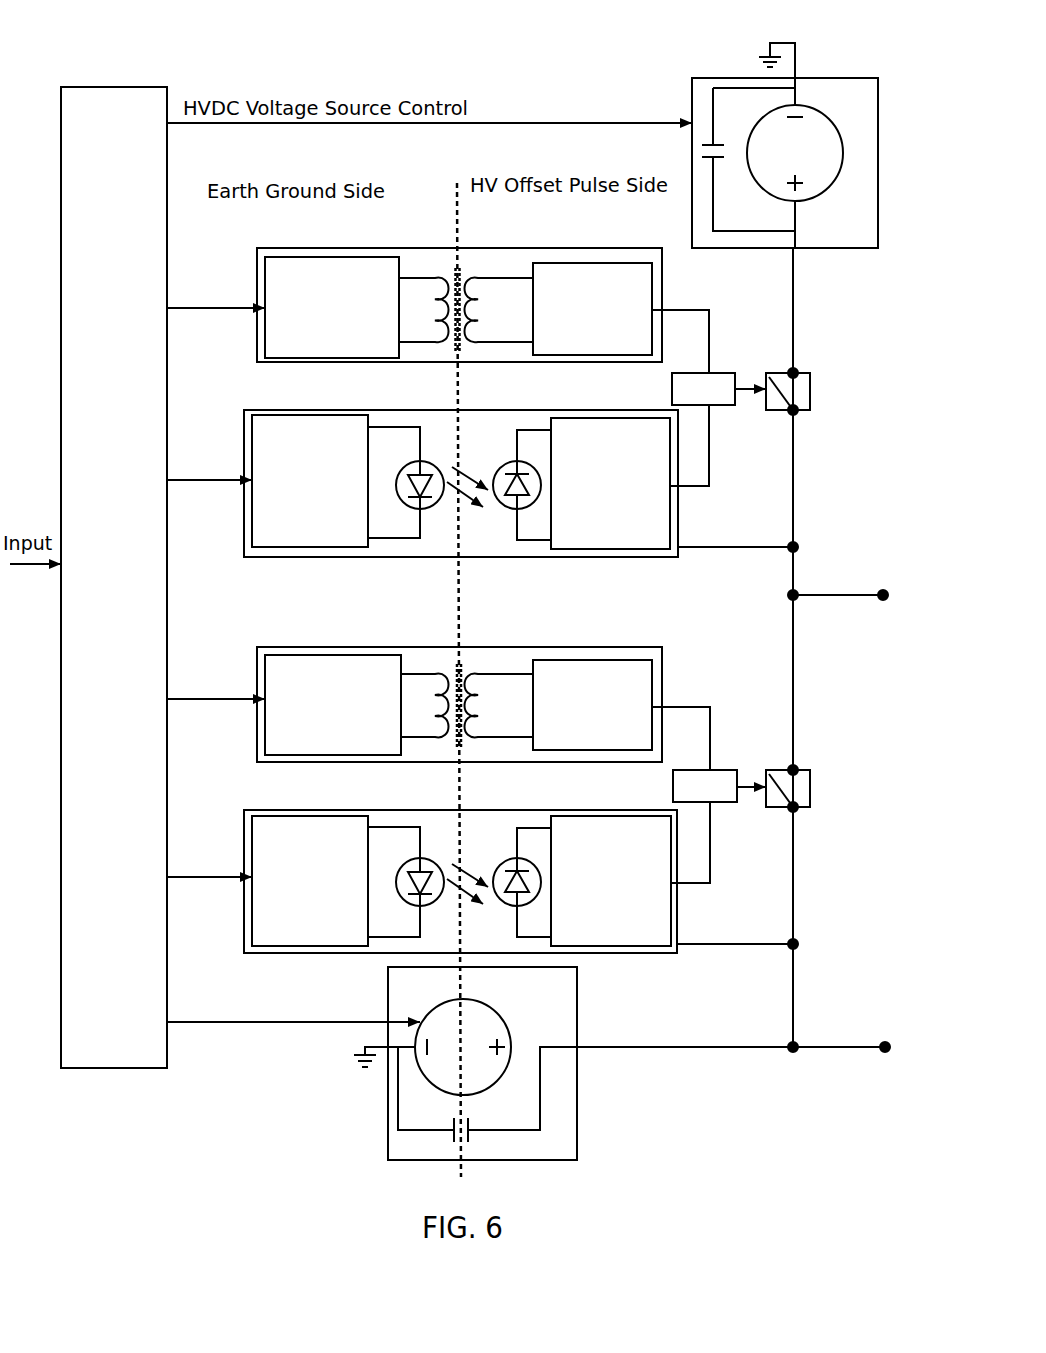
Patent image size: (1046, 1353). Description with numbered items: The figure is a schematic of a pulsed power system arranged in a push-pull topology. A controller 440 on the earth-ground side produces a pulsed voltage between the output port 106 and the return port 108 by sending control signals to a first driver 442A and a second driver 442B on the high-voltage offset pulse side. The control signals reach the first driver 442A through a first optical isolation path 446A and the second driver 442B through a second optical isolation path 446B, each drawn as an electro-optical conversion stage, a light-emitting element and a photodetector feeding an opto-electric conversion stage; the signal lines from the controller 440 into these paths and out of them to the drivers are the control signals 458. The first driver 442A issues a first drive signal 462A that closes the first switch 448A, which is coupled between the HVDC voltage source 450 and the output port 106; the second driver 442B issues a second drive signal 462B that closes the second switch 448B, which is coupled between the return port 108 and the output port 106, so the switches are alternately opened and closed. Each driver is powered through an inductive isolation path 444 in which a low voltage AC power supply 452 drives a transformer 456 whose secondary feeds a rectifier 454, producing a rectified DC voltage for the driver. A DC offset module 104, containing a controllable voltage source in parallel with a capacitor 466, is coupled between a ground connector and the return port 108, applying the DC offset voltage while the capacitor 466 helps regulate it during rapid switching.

The controller 440 is at (108, 87).
The HVDC voltage source 450 is at (836, 78).
The inductive isolation path 444 is at (484, 248).
The low voltage AC power supply 452 is at (325, 257).
The transformer 456 is at (440, 268).
The rectifier 454 is at (596, 263).
The first driver 442A is at (711, 373).
The second driver 442B is at (712, 770).
The first drive signal 462A is at (750, 389).
The second drive signal 462B is at (751, 787).
The first switch 448A is at (800, 373).
The second switch 448B is at (800, 770).
The first optical isolation path 446A is at (512, 394).
The second optical isolation path 446B is at (490, 800).
The control signal 458 is at (196, 480).
The output port 106 is at (886, 592).
The return port 108 is at (888, 1044).
The DC offset module 104 is at (480, 1081).
The capacitor 466 is at (470, 1135).